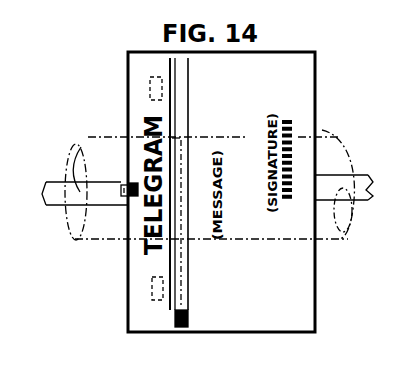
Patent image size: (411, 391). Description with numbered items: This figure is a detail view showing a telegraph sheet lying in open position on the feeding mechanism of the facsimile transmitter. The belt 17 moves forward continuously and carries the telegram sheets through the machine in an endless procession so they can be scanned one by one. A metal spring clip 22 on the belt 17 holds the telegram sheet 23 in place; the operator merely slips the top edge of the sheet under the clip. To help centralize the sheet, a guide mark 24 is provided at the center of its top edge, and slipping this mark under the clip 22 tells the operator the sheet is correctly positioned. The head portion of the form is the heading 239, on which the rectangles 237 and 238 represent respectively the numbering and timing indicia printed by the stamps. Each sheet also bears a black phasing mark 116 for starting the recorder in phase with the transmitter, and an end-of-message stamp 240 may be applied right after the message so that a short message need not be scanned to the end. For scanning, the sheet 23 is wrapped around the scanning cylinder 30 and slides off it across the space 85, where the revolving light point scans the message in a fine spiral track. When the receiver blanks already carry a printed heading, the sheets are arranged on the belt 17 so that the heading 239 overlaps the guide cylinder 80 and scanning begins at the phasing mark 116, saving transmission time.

The belt 17 is at (57, 205).
The metal spring clip 22 is at (119, 199).
The telegram sheet 23 is at (305, 80).
The guide mark 24 is at (134, 182).
The scanning cylinder 30 is at (322, 137).
The guide cylinder 80 is at (95, 143).
The space 85 is at (180, 146).
The phasing mark 116 is at (189, 316).
The numbering indicia rectangle 237 is at (150, 90).
The timing indicia rectangle 238 is at (152, 290).
The heading 239 is at (145, 319).
The end-of-message stamp 240 is at (287, 202).